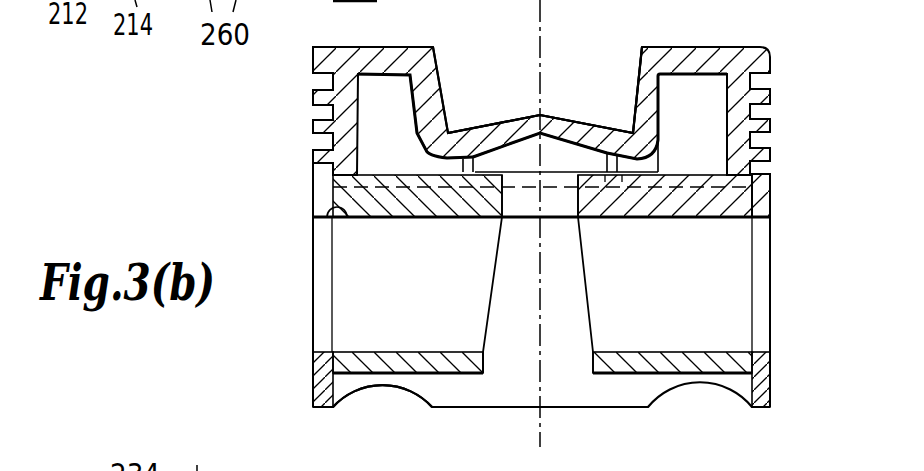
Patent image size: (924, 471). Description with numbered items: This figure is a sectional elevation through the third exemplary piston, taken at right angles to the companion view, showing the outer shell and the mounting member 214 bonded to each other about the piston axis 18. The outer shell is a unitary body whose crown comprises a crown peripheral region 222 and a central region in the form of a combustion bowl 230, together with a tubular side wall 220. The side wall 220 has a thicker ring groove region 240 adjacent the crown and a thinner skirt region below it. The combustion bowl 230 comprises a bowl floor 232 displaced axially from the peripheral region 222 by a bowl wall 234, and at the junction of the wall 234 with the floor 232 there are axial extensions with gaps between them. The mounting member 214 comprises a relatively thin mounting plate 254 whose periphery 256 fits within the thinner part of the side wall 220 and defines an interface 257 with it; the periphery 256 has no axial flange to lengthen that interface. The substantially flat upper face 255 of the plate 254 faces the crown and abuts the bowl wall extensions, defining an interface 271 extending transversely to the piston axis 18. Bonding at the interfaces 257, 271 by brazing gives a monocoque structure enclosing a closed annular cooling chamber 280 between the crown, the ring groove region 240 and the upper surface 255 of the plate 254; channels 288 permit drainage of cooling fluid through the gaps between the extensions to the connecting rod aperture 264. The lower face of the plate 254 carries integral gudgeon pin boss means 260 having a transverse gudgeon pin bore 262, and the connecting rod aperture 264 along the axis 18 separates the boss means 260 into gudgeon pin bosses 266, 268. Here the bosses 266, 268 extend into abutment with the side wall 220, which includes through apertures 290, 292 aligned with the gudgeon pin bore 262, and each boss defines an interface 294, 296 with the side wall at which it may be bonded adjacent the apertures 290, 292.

The piston axis 18 is at (543, 22).
The tubular side wall 220 is at (745, 330).
The crown peripheral region 222 is at (700, 47).
The combustion bowl 230 is at (603, 95).
The bowl floor 232 is at (493, 133).
The bowl wall 234 is at (643, 73).
The ring groove region 240 is at (775, 147).
The mounting plate 254 is at (400, 220).
The upper face of the plate 255 is at (390, 175).
The periphery of the plate 256 is at (345, 218).
The interface 257 is at (338, 193).
The gudgeon pin boss means 260 is at (488, 368).
The gudgeon pin bore 262 is at (355, 327).
The connecting rod aperture 264 is at (534, 206).
The gudgeon pin boss 266 is at (698, 374).
The gudgeon pin boss 268 is at (382, 366).
The interface 271 is at (457, 217).
The closed annular cooling chamber 280 is at (707, 98).
The channels 288 is at (689, 172).
The through aperture 290 is at (757, 260).
The through aperture 292 is at (320, 304).
The interface 294 is at (750, 360).
The interface 296 is at (332, 375).
The mounting member 214 is at (447, 388).